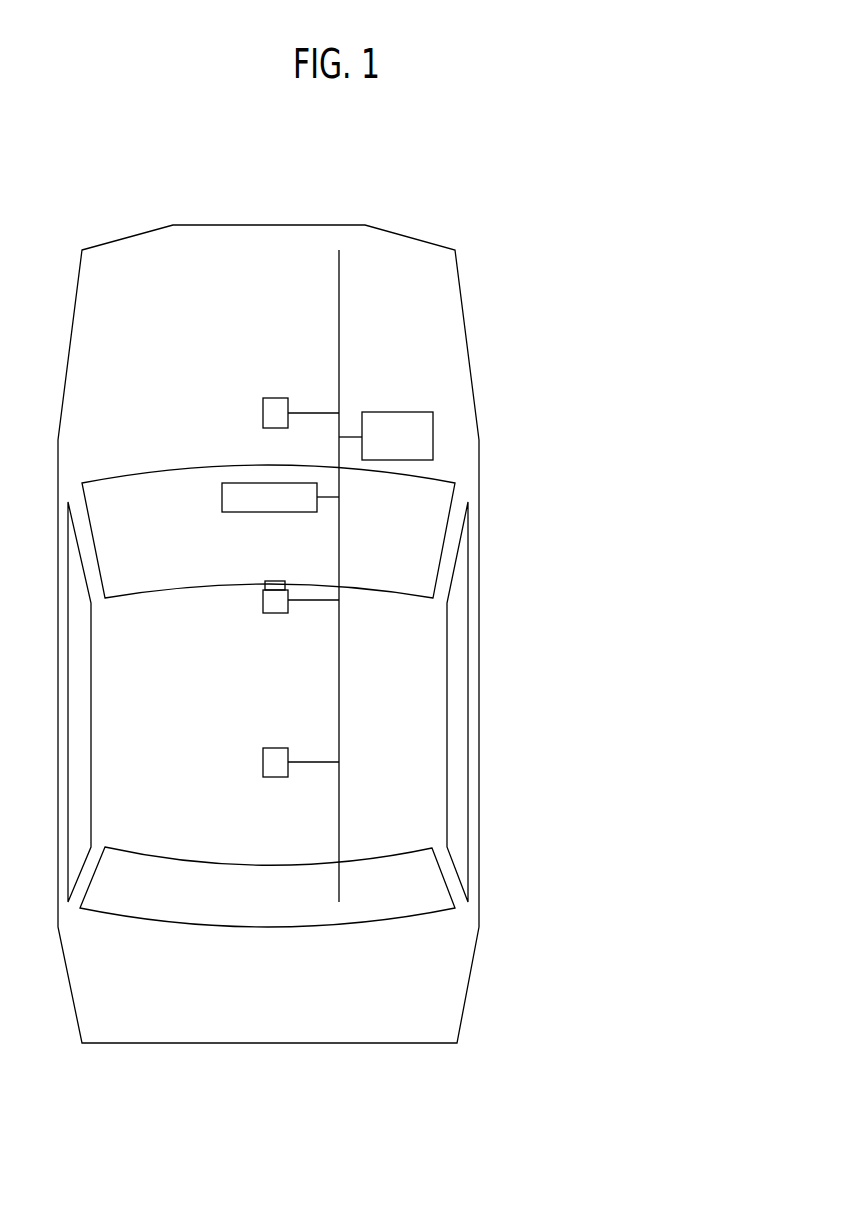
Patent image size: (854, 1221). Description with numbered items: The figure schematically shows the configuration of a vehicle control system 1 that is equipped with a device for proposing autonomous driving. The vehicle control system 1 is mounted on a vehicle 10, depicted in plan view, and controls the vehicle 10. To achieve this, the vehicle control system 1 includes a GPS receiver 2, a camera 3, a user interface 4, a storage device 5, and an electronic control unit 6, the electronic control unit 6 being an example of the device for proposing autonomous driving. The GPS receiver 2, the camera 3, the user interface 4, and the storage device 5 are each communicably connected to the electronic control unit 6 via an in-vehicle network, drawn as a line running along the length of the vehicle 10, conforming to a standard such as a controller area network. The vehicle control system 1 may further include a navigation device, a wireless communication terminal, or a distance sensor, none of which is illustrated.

The vehicle control system 1 is at (687, 922).
The GPS receiver 2 is at (263, 762).
The camera 3 is at (263, 603).
The user interface 4 is at (222, 497).
The storage device 5 is at (263, 411).
The electronic control unit 6 is at (433, 437).
The vehicle 10 is at (479, 877).